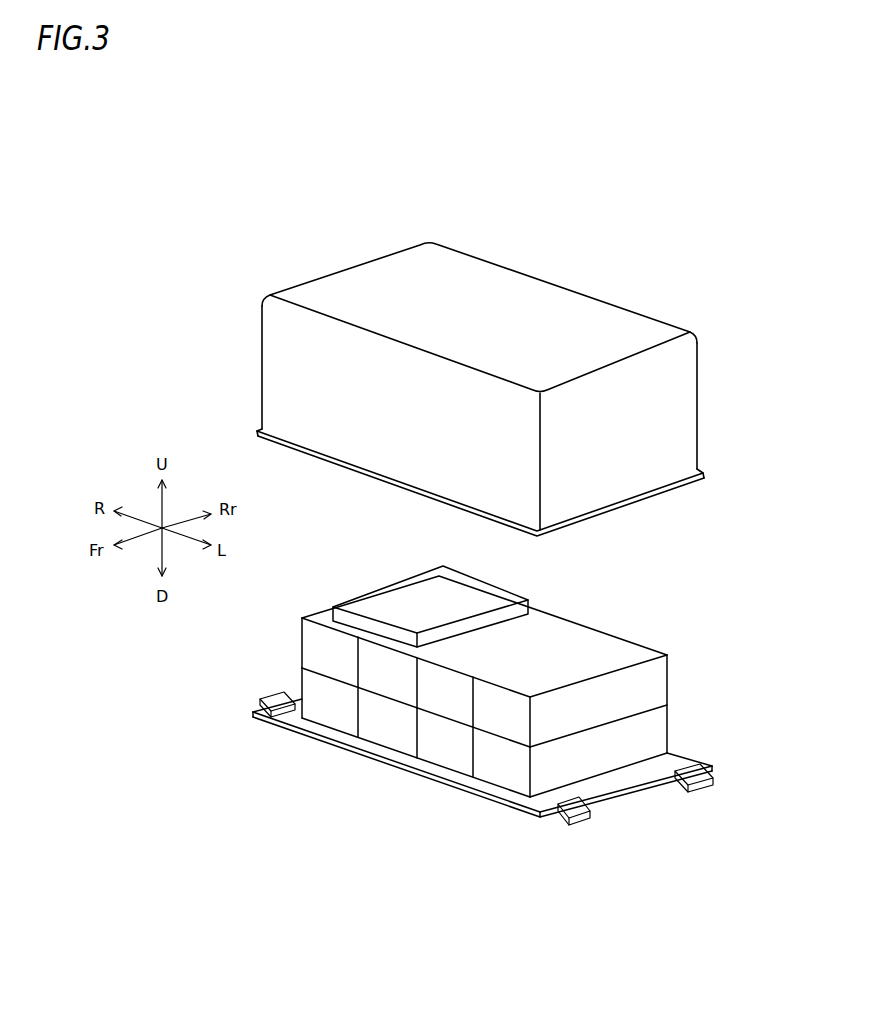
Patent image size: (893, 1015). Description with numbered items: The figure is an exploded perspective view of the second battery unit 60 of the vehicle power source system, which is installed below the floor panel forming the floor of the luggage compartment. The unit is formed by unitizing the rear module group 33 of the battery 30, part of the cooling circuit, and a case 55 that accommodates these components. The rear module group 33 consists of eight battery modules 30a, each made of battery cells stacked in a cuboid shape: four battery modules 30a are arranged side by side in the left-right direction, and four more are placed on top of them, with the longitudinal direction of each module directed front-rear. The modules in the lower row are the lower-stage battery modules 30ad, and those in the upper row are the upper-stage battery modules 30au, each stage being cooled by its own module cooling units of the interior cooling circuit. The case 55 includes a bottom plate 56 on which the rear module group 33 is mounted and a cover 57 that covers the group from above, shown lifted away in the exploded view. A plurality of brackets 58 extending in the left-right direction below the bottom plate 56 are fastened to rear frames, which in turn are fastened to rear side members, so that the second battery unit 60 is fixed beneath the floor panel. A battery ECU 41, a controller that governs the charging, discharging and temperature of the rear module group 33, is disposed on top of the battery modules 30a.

The second battery unit 60 is at (612, 270).
The cover 57 is at (502, 379).
The bottom plate 56 is at (684, 750).
The case 55 is at (748, 516).
The bracket 58 is at (280, 697).
The battery ECU 41 is at (403, 596).
The rear module group 33 is at (490, 724).
The battery 30 is at (490, 724).
The battery module 30a is at (421, 746).
The upper-stage battery module 30au is at (333, 650).
The lower-stage battery module 30ad is at (397, 727).